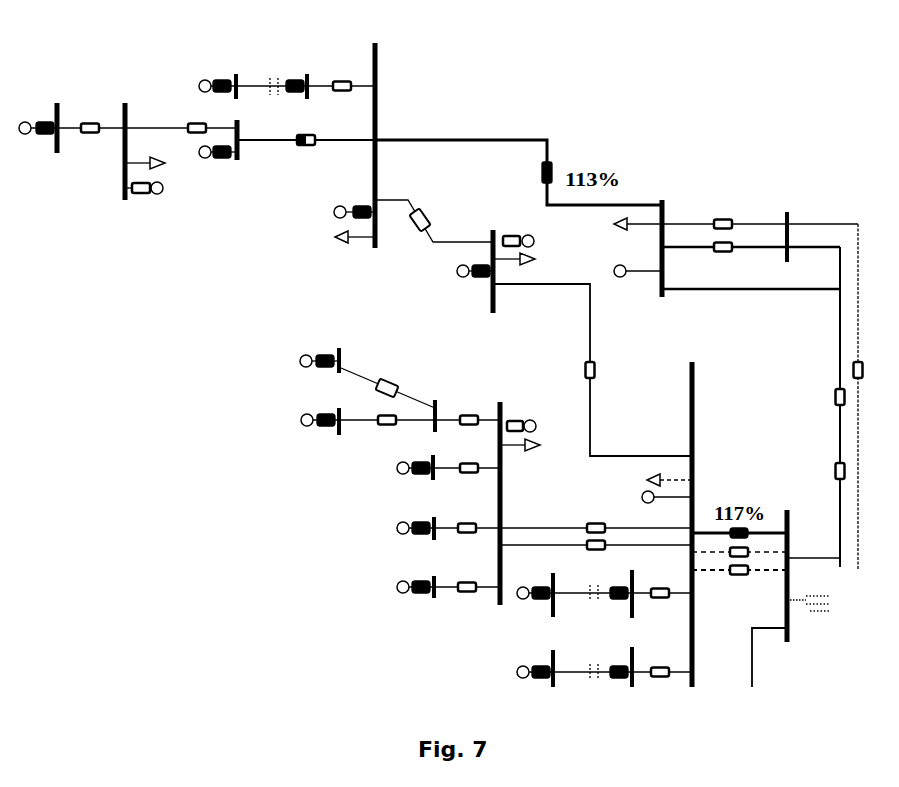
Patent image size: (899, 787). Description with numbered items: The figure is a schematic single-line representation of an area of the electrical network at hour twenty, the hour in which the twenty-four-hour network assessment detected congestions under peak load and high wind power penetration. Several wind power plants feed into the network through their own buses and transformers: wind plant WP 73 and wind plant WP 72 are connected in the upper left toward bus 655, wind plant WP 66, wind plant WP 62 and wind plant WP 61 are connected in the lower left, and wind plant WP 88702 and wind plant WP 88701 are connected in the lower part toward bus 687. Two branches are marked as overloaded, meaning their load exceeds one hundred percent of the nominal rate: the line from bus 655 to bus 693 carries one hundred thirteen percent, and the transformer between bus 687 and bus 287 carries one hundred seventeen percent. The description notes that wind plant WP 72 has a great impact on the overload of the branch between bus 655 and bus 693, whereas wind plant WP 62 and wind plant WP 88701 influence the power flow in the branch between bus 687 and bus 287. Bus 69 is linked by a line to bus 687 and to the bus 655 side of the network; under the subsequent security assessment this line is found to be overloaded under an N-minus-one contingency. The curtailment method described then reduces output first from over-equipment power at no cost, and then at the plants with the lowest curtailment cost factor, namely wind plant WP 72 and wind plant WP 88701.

The wind plant WP 73 is at (127, 140).
The wind plant WP 72 is at (287, 132).
The bus 655 is at (498, 133).
The bus 693 is at (738, 373).
The bus 69 is at (574, 343).
The bus 687 is at (706, 512).
The bus 287 is at (766, 581).
The wind plant WP 66 is at (386, 476).
The wind plant WP 62 is at (511, 533).
The wind plant WP 61 is at (414, 587).
The wind plant WP 88702 is at (602, 585).
The wind plant WP 88701 is at (551, 667).